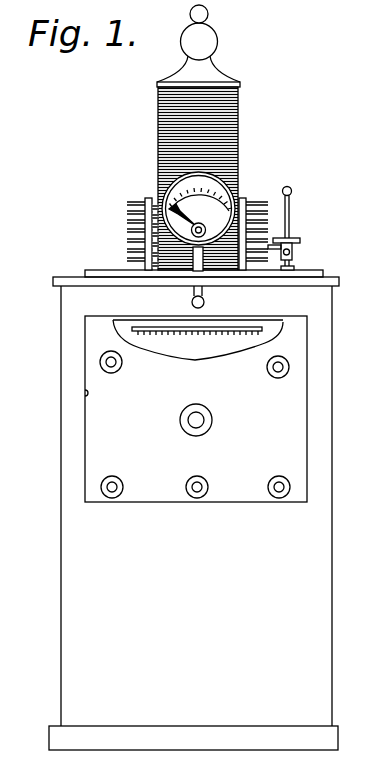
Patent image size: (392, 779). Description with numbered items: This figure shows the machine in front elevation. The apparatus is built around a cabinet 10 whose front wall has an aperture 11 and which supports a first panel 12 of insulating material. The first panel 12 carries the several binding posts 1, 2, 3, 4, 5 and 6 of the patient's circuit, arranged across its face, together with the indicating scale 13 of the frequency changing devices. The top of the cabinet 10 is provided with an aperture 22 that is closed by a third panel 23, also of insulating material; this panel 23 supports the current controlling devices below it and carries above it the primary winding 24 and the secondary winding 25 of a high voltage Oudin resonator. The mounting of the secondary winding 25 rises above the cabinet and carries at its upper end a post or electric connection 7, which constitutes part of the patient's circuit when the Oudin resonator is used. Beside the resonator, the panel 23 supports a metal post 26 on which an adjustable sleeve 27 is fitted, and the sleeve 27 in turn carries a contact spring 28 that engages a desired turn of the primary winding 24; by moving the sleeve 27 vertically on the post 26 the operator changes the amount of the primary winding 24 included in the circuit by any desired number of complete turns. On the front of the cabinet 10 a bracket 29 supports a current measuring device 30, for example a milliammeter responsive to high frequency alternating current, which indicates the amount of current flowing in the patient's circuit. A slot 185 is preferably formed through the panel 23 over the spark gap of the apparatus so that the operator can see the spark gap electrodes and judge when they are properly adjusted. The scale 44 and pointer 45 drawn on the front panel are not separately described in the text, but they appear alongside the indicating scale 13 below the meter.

The binding post 1 is at (111, 356).
The binding post 2 is at (278, 360).
The binding post 3 is at (112, 481).
The binding post 4 is at (279, 481).
The binding post 5 is at (196, 413).
The binding post 6 is at (197, 481).
The post or electric connection 7 is at (199, 32).
The cabinet 10 is at (62, 567).
The aperture 11 is at (85, 397).
The first panel 12 is at (97, 423).
The indicating scale 13 is at (117, 325).
The aperture 22 is at (103, 278).
The third panel 23 is at (104, 271).
The primary winding 24 is at (130, 204).
The secondary winding 25 is at (239, 114).
The metal post 26 is at (291, 191).
The adjustable sleeve 27 is at (300, 241).
The contact spring 28 is at (294, 268).
The bracket 29 is at (191, 301).
The current measuring device 30 is at (221, 192).
The scale 44 is at (231, 331).
The pointer 45 is at (203, 333).
The slot 185 is at (305, 272).